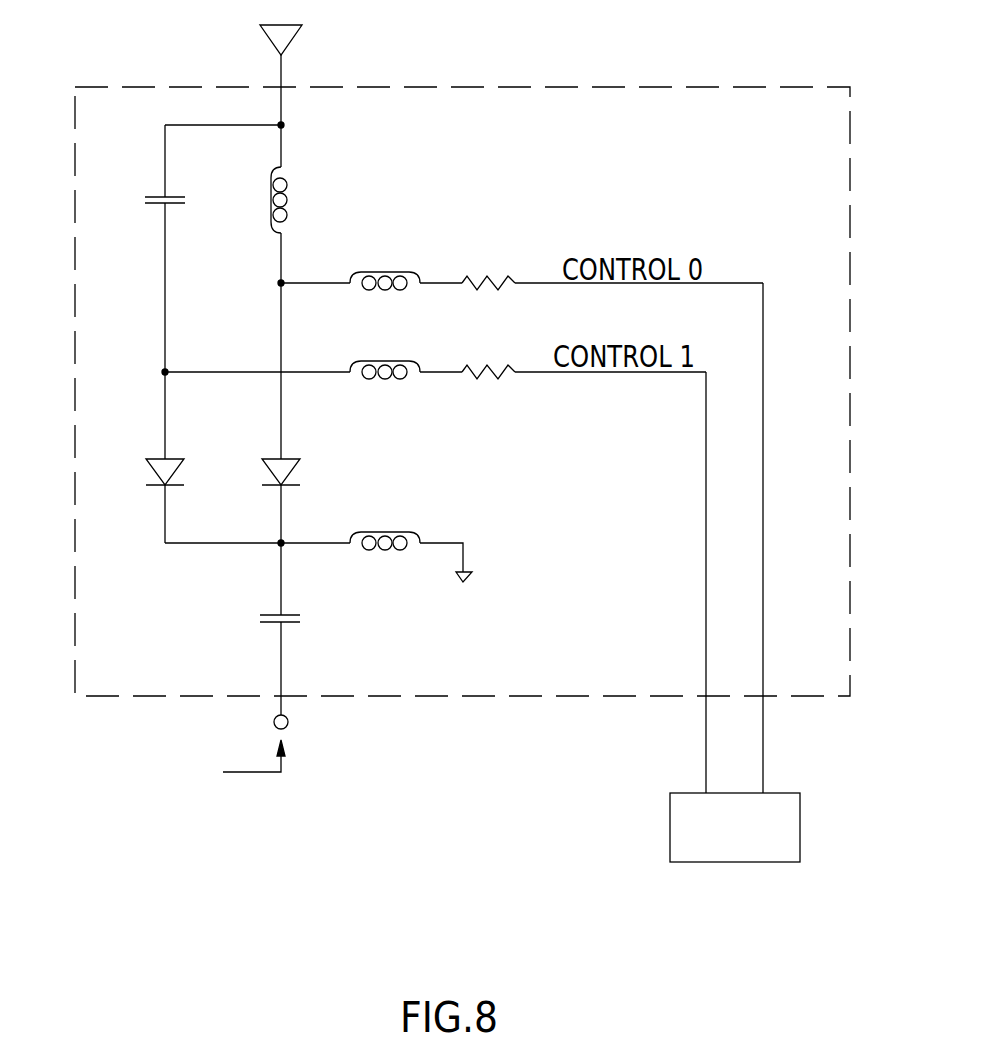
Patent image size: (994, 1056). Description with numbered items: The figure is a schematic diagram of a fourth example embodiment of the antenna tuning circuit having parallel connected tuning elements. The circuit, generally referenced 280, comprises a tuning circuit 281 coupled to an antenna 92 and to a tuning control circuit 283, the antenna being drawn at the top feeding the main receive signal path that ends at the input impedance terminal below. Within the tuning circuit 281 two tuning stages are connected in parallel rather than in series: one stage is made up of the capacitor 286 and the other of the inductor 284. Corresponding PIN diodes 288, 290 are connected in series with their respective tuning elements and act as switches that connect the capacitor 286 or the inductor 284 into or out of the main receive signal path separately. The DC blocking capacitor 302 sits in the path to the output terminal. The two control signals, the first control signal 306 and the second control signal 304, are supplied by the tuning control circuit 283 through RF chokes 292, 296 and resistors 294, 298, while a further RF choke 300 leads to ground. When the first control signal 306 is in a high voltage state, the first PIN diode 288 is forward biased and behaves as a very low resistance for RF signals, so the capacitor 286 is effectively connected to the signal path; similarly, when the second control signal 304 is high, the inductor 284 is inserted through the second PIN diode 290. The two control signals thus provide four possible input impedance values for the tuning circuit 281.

The antenna 92 is at (303, 36).
The circuit 280 is at (388, 781).
The tuning circuit 281 is at (422, 697).
The tuning control circuit 283 is at (800, 827).
The inductor L1 284 is at (268, 210).
The capacitor C0 286 is at (155, 207).
The PIN diode D0 288 is at (160, 458).
The PIN diode D1 290 is at (275, 458).
The RF choke L 292 is at (405, 272).
The resistor R 294 is at (512, 285).
The RF choke L 296 is at (385, 379).
The resistor R 298 is at (480, 375).
The RF choke L 300 is at (405, 533).
The DC blocking capacitor C 302 is at (273, 623).
The Control1 signal 304 is at (706, 586).
The Control0 signal 306 is at (763, 597).